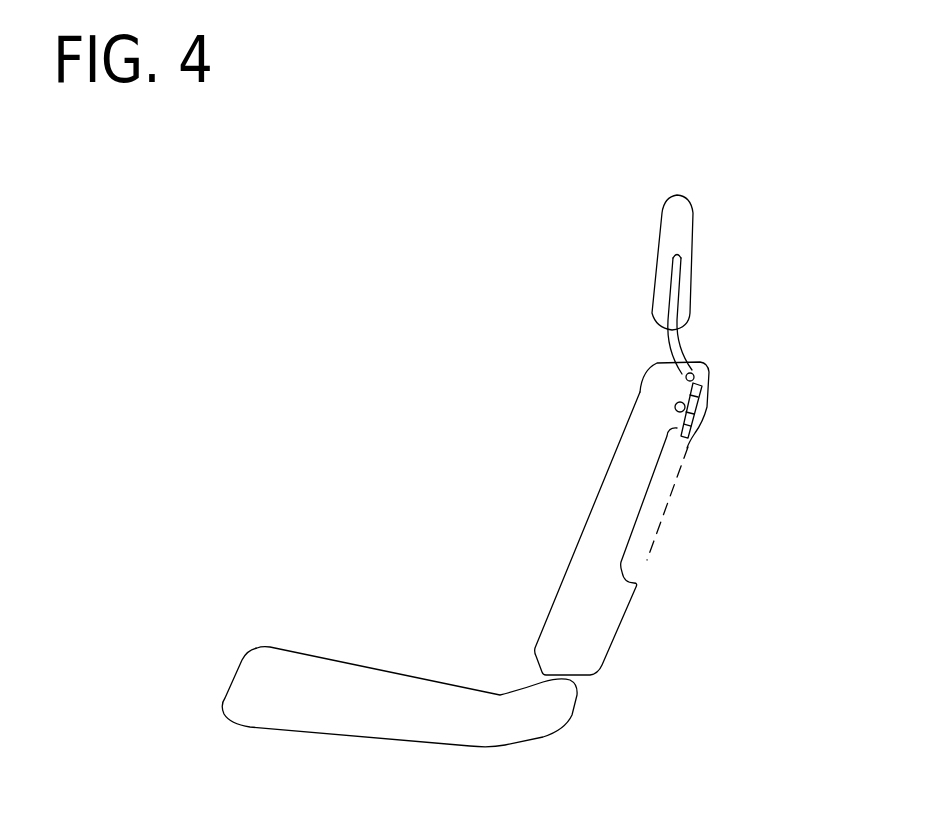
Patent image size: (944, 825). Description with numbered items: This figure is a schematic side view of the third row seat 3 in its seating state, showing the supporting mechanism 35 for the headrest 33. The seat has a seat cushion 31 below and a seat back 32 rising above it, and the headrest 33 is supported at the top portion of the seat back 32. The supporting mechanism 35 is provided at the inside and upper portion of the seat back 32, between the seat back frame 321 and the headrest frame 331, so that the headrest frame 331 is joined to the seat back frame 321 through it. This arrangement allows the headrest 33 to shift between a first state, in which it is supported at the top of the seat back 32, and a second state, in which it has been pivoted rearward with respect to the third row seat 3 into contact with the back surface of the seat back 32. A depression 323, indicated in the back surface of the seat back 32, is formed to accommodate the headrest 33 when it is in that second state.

The third row seat 3 is at (594, 269).
The seat cushion 31 is at (257, 672).
The seat back 32 is at (593, 542).
The headrest 33 is at (682, 240).
The supporting mechanism 35 is at (742, 432).
The seat back frame 321 is at (675, 407).
The depression 323 is at (622, 575).
The headrest frame 331 is at (677, 344).